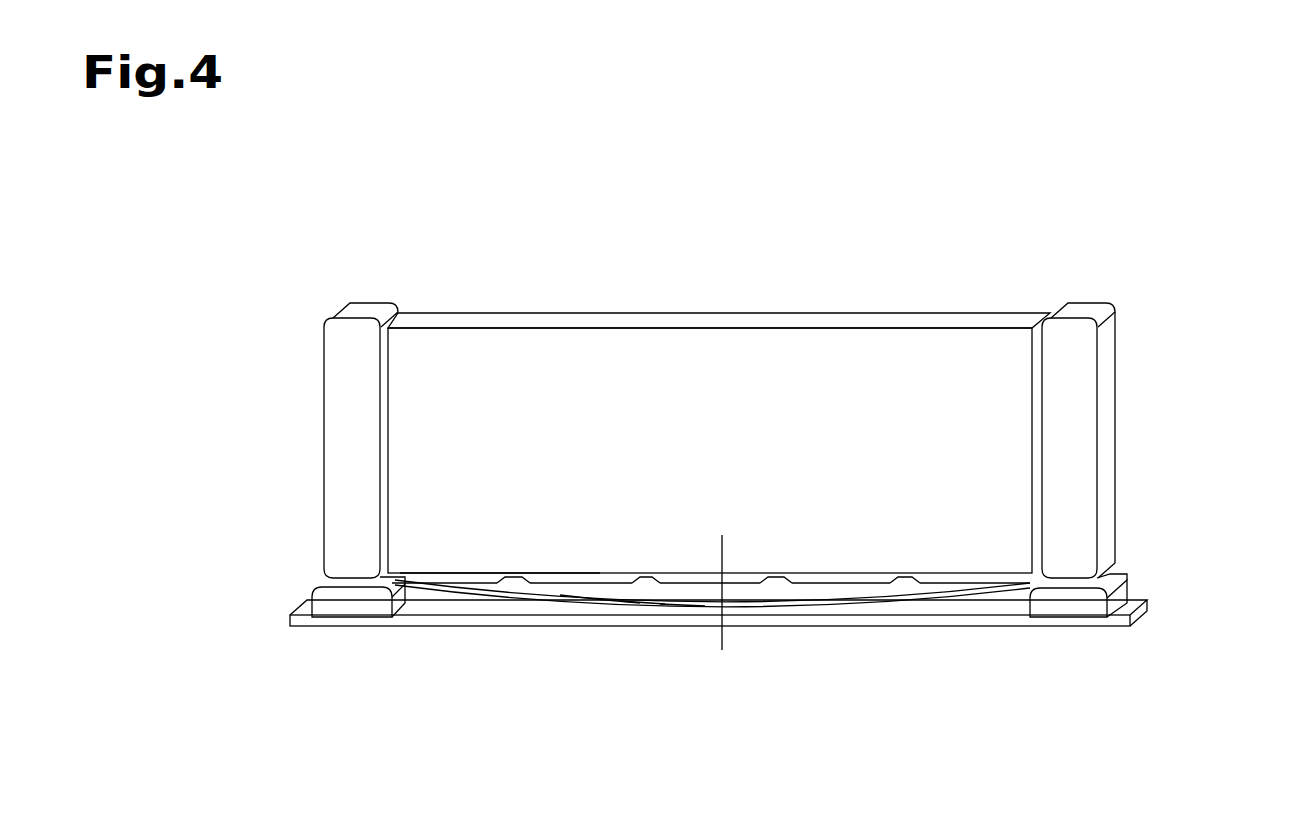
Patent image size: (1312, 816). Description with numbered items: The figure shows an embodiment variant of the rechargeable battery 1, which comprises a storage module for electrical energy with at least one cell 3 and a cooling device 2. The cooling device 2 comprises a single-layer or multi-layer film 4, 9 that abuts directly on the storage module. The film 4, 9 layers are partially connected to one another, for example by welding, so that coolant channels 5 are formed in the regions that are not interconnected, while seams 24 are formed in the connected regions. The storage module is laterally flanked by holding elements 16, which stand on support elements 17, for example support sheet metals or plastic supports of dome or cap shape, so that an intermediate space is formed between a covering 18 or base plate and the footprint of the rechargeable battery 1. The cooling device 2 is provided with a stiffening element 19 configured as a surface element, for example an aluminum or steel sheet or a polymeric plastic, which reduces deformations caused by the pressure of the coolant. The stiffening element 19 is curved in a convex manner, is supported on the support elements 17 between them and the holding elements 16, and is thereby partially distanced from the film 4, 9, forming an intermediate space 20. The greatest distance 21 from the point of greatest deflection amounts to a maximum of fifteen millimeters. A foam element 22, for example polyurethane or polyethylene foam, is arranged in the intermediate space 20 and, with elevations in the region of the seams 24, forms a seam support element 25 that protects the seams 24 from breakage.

The rechargeable battery 1 is at (901, 263).
The cooling device 2 is at (624, 594).
The cell 3 is at (981, 318).
The film 4 is at (683, 568).
The coolant channel 5 is at (448, 572).
The film 9 is at (682, 594).
The holding element 16 is at (321, 291).
The support element 17 is at (313, 580).
The covering 18 is at (416, 630).
The stiffening element 19 is at (823, 608).
The intermediate space 20 is at (580, 595).
The greatest distance 21 is at (726, 606).
The foam element 22 is at (643, 594).
The seam 24 is at (513, 575).
The seam support element 25 is at (900, 586).